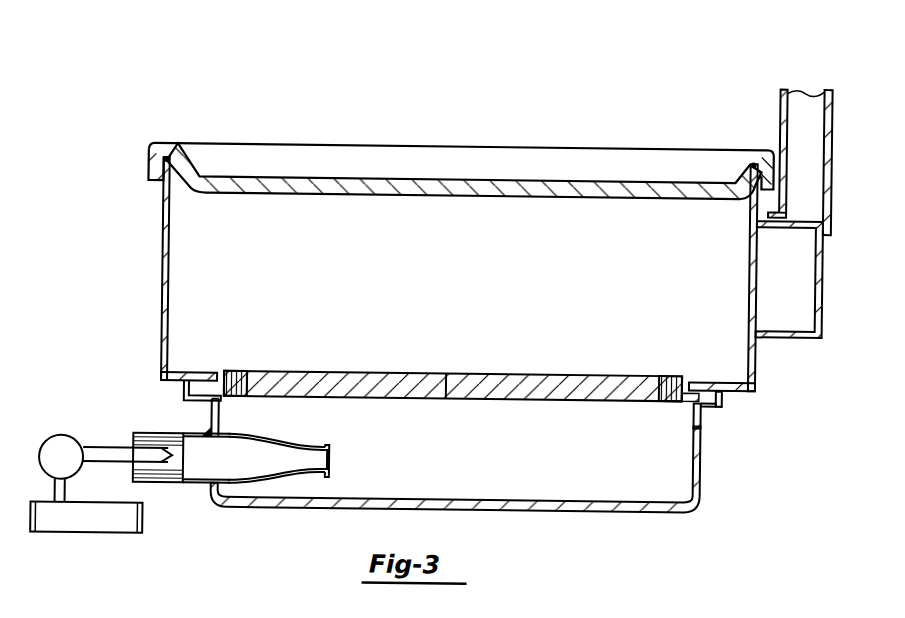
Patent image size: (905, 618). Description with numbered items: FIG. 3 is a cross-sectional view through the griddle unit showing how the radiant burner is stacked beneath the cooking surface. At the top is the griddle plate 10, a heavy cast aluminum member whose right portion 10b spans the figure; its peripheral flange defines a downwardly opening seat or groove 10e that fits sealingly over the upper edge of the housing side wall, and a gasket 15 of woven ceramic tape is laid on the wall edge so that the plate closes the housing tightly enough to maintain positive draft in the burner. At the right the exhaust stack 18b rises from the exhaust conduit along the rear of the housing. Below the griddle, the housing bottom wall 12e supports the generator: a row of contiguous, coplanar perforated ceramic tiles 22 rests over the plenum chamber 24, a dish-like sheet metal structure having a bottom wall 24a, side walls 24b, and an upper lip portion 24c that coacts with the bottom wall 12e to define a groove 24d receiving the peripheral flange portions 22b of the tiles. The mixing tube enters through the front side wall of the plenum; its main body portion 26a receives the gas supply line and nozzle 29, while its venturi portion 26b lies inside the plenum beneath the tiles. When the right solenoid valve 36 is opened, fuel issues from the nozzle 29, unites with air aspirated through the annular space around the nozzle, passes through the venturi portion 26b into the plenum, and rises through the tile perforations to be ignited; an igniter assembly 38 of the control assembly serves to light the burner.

The griddle plate 10 is at (427, 161).
The right portion of griddle plate 10b is at (385, 174).
The peripheral seat or groove 10e is at (147, 172).
The gasket 15 is at (166, 157).
The exhaust vent or stack 18b is at (805, 80).
The bottom wall of housing 12e is at (720, 376).
The ceramic tiles 22 is at (442, 347).
The peripheral flange portions of tiles 22b is at (205, 371).
The plenum chamber 24 is at (504, 475).
The bottom wall of plenum chamber 24a is at (583, 492).
The side walls of plenum chamber 24b is at (707, 466).
The upper lip portion of plenum chamber 24c is at (708, 418).
The groove 24d is at (723, 388).
The main body portion of mixing tube 26a is at (175, 483).
The venturi portion of mixing tube 26b is at (307, 429).
The nozzle 29 is at (150, 440).
The right solenoid valve 36 is at (63, 436).
The left igniter assembly 38 is at (112, 533).